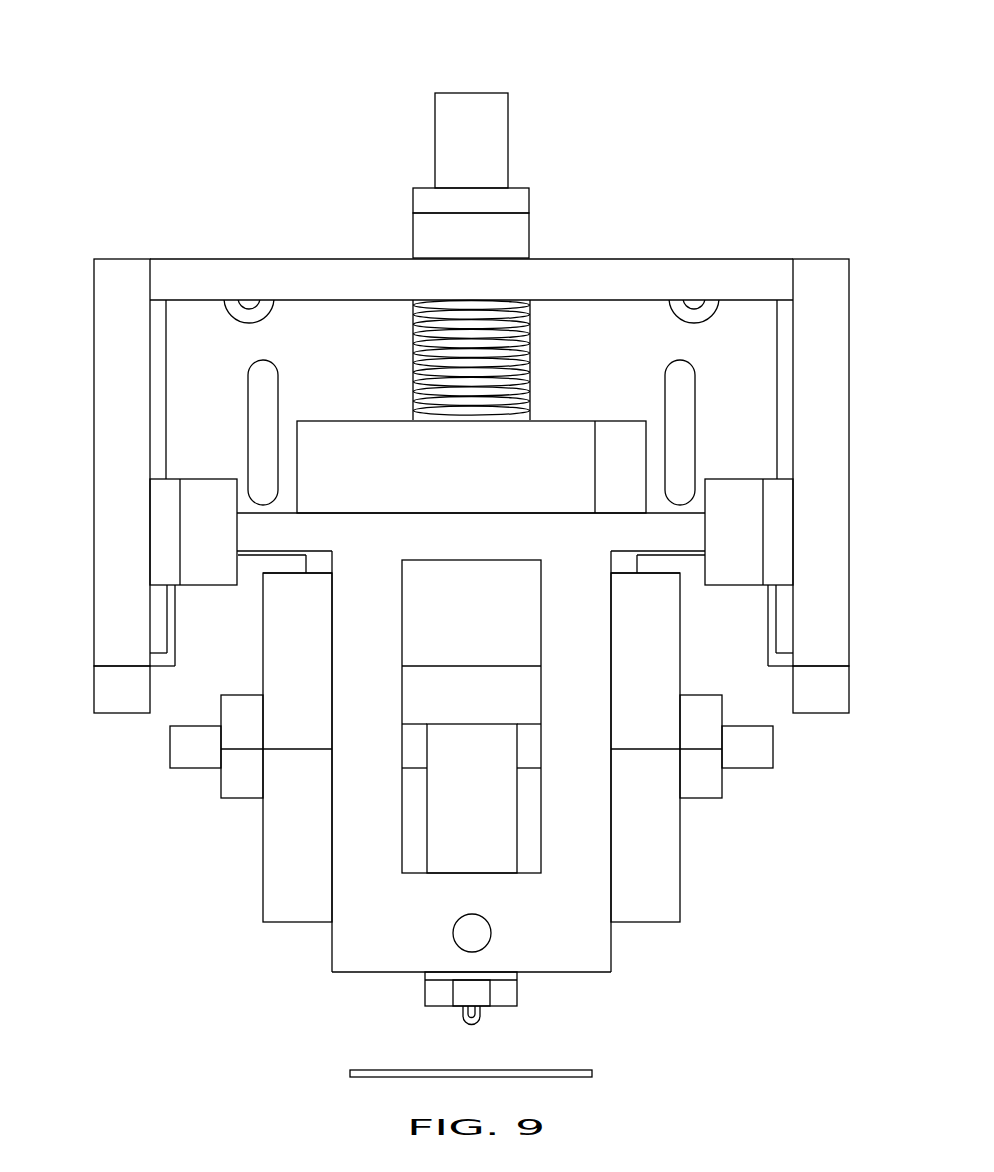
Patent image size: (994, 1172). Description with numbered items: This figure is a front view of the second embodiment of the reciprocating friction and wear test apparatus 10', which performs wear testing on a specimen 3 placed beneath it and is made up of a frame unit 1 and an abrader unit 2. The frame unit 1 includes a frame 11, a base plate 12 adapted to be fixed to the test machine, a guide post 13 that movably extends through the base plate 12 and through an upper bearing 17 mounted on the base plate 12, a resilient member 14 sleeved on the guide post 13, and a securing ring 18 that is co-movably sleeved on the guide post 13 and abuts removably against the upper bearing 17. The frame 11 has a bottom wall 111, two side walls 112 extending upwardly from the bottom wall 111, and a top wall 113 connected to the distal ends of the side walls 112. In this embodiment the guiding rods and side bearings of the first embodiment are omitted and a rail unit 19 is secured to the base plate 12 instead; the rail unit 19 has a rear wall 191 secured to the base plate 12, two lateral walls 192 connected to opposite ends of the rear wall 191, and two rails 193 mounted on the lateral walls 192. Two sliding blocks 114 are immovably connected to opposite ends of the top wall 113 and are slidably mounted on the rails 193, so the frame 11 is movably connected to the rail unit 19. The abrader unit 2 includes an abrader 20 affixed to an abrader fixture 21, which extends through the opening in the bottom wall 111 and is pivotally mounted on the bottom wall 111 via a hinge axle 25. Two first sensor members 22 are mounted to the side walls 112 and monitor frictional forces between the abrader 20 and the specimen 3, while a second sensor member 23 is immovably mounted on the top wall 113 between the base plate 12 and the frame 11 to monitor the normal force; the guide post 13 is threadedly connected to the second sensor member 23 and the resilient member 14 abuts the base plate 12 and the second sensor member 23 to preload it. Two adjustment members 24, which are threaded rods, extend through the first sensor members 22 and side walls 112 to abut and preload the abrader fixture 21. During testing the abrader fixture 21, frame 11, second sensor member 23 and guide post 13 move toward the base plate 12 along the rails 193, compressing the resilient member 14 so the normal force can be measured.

The frame unit 1 is at (852, 249).
The abrader unit 2 is at (693, 922).
The specimen 3 is at (583, 1069).
The device 10' is at (546, 218).
The frame 11 is at (325, 983).
The base plate 12 is at (707, 258).
The guide post 13 is at (472, 90).
The resilient member 14 is at (416, 341).
The upper bearing 17 is at (423, 239).
The securing ring 18 is at (423, 202).
The rail unit 19 is at (852, 449).
The abrader 20 is at (480, 1022).
The abrader fixture 21 is at (471, 722).
The first sensor members 22 is at (268, 893).
The second sensor member 23 is at (568, 420).
The adjustment members 24 is at (170, 758).
The hinge axle 25 is at (477, 937).
The bottom wall 111 is at (372, 965).
The side walls 112 is at (348, 625).
The top wall 113 is at (318, 525).
The sliding blocks 114 is at (204, 528).
The rear wall 191 is at (600, 322).
The lateral walls 192 is at (93, 386).
The rails 193 is at (158, 320).